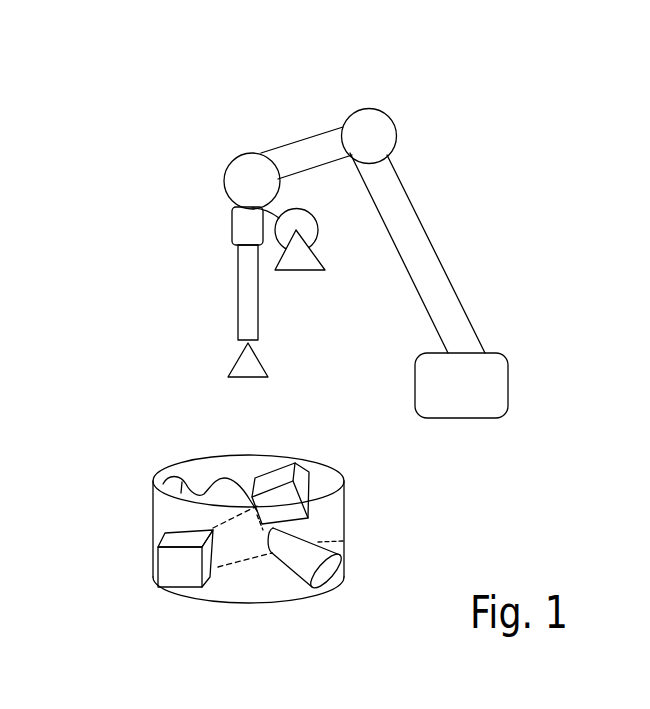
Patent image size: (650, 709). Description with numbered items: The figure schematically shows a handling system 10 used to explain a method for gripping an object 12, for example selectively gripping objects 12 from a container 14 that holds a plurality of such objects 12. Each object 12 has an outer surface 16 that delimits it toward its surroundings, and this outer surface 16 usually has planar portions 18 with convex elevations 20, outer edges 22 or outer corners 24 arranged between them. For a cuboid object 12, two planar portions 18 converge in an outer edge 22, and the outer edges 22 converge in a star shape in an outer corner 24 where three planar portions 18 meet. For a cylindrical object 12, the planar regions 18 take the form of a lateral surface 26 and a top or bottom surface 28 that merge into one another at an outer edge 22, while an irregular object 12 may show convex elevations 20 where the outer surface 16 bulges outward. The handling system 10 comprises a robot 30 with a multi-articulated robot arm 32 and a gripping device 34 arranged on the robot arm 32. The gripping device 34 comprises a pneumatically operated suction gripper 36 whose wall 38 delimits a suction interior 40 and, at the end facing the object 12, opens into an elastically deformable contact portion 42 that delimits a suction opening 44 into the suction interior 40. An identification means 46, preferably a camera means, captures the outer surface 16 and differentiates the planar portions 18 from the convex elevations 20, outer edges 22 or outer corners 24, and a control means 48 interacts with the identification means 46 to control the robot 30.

The handling system 10 is at (277, 64).
The object 12 is at (165, 488).
The container 14 is at (345, 503).
The outer surface 16 is at (254, 550).
The planar portion 18 is at (135, 535).
The convex elevation 20 is at (181, 528).
The outer edge 22 is at (349, 589).
The outer corner 24 is at (300, 459).
The lateral surface 26 is at (288, 566).
The top surface or bottom surface 28 is at (333, 583).
The robot 30 is at (352, 270).
The robot arm 32 is at (240, 223).
The gripping device 34 is at (192, 298).
The suction gripper 36 is at (245, 375).
The wall 38 is at (255, 358).
The suction interior 40 is at (252, 350).
The contact portion 42 is at (284, 376).
The suction opening 44 is at (246, 392).
The identification means 46 is at (318, 255).
The control means 48 is at (495, 387).